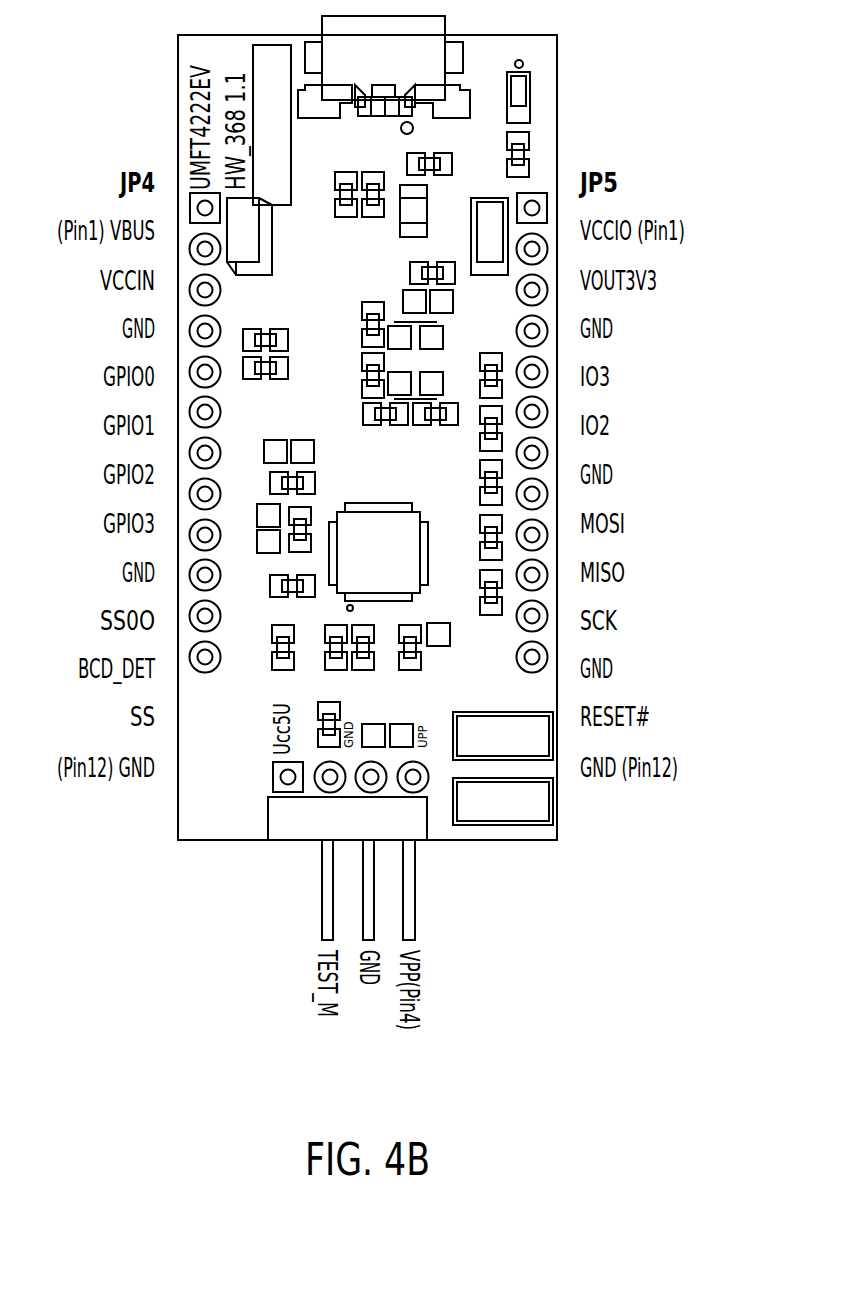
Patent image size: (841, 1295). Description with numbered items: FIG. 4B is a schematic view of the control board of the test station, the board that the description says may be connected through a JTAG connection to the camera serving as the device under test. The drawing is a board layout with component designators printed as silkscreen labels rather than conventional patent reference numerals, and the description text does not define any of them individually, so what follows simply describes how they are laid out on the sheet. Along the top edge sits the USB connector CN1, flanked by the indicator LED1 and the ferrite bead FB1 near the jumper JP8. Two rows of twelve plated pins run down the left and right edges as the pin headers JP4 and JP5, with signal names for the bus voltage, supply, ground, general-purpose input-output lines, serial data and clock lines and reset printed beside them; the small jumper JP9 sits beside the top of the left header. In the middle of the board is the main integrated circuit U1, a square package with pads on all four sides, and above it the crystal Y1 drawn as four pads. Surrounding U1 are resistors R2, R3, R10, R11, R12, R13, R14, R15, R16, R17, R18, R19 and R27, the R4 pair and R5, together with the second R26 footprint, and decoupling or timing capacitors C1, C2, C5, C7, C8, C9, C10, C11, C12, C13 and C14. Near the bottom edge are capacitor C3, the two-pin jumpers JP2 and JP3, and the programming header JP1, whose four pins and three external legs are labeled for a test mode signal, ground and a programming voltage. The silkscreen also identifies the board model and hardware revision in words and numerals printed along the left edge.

The programming header JP1 is at (350, 851).
The jumper JP2 is at (495, 801).
The jumper JP3 is at (495, 736).
The pin header JP4 is at (205, 452).
The pin header JP5 is at (532, 452).
The jumper JP8 is at (471, 236).
The jumper JP9 is at (267, 236).
The USB connector CN1 is at (401, 75).
The element LED1 is at (534, 91).
The FT4222H integrated circuit U1 is at (394, 557).
The crystal Y1 is at (434, 360).
The ferrite bead FB1 is at (430, 211).
The resistor R2 is at (375, 178).
The resistor R3 is at (348, 178).
The resistor R4 is at (336, 647).
The resistor R5 is at (357, 705).
The resistor R10 is at (385, 427).
The resistor R11 is at (271, 586).
The resistor R12 is at (356, 375).
The resistor R13 is at (478, 592).
The resistor R14 is at (478, 537).
The resistor R15 is at (478, 482).
The resistor R16 is at (482, 428).
The resistor R17 is at (478, 375).
The resistor R18 is at (265, 323).
The resistor R19 is at (265, 381).
The resistor R26 is at (428, 439).
The resistor R27 is at (270, 647).
The capacitor C1 is at (420, 276).
The capacitor C2 is at (452, 304).
The capacitor C3 is at (397, 718).
The capacitor C5 is at (454, 164).
The capacitor C7 is at (356, 324).
The capacitor C8 is at (435, 427).
The capacitor C9 is at (295, 544).
The capacitor C10 is at (402, 647).
The capacitor C11 is at (270, 480).
The capacitor C12 is at (254, 528).
The capacitor C13 is at (453, 644).
The capacitor C14 is at (270, 449).